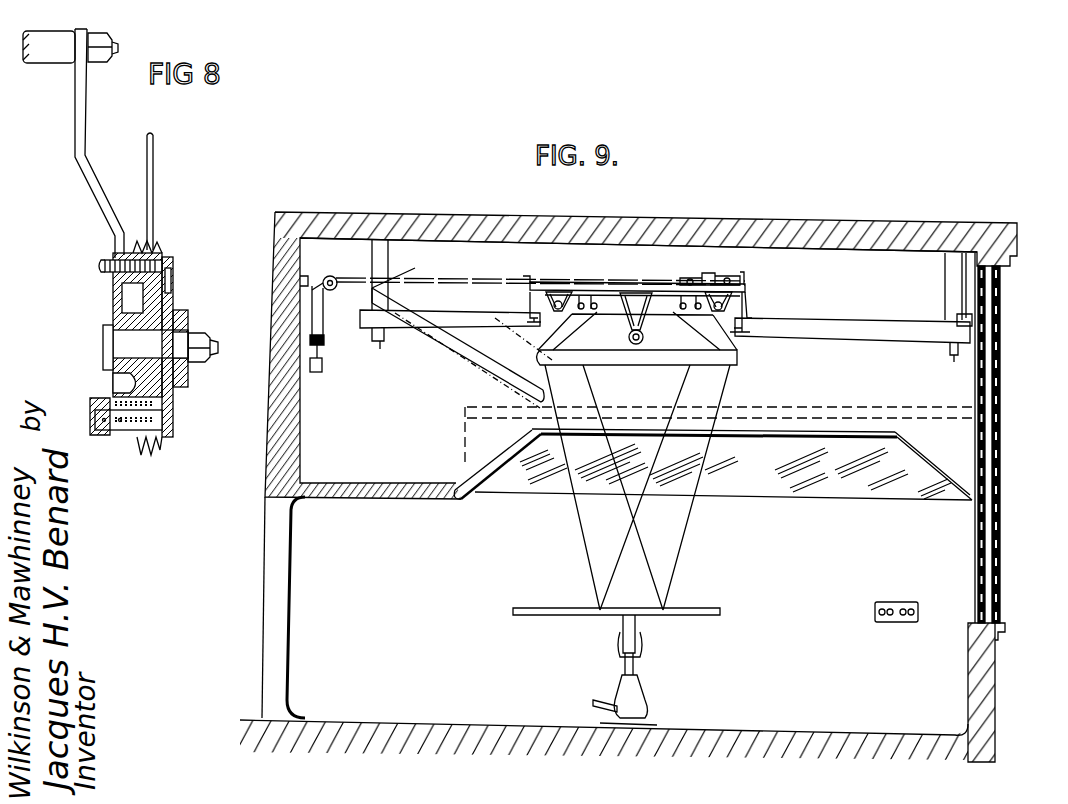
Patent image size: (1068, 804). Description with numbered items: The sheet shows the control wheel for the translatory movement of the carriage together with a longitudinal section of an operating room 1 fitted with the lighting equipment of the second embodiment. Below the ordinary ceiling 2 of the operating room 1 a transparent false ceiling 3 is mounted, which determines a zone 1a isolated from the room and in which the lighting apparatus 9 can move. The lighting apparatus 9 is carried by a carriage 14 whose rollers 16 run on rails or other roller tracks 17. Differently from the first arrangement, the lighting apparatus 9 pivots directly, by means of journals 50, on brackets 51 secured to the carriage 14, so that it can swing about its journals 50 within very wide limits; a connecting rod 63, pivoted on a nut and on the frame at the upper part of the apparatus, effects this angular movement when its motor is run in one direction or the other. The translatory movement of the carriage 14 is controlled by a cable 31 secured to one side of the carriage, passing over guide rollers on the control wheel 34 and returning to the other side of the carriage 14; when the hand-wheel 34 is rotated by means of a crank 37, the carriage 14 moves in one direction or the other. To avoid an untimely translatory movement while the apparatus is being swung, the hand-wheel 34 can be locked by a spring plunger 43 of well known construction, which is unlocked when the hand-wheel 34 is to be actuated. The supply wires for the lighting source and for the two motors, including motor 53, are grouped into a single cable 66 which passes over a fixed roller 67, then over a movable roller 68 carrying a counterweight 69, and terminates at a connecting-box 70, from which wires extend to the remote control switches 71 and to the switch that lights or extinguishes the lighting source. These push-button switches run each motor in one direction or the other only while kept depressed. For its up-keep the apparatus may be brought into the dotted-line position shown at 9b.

In FIG. 8, the crank 37 is at (78, 103).
In FIG. 8, the cable 31 is at (155, 155).
In FIG. 8, the control wheel 34 is at (160, 247).
In FIG. 8, the spring plunger 43 is at (112, 436).
In FIG. 9, the operating room 1 is at (296, 560).
In FIG. 9, the zone 1a is at (435, 262).
In FIG. 9, the ordinary ceiling 2 is at (322, 230).
In FIG. 9, the transparent false ceiling 3 is at (560, 437).
In FIG. 9, the lighting apparatus 9 is at (548, 362).
In FIG. 9, the up-keep position of the apparatus 9b is at (436, 346).
In FIG. 9, the carriage 14 is at (597, 283).
In FIG. 9, the rollers 16 is at (548, 298).
In FIG. 9, the rails 17 is at (437, 317).
In FIG. 9, the journals 50 is at (643, 352).
In FIG. 9, the brackets 51 is at (643, 305).
In FIG. 9, the motor 53 is at (710, 275).
In FIG. 9, the connecting rod 63 is at (663, 298).
In FIG. 9, the cable 66 is at (474, 278).
In FIG. 9, the fixed roller 67 is at (328, 285).
In FIG. 9, the movable roller 68 is at (318, 338).
In FIG. 9, the counterweight 69 is at (310, 368).
In FIG. 9, the connecting-box 70 is at (307, 280).
In FIG. 9, the remote control switches 71 is at (918, 610).